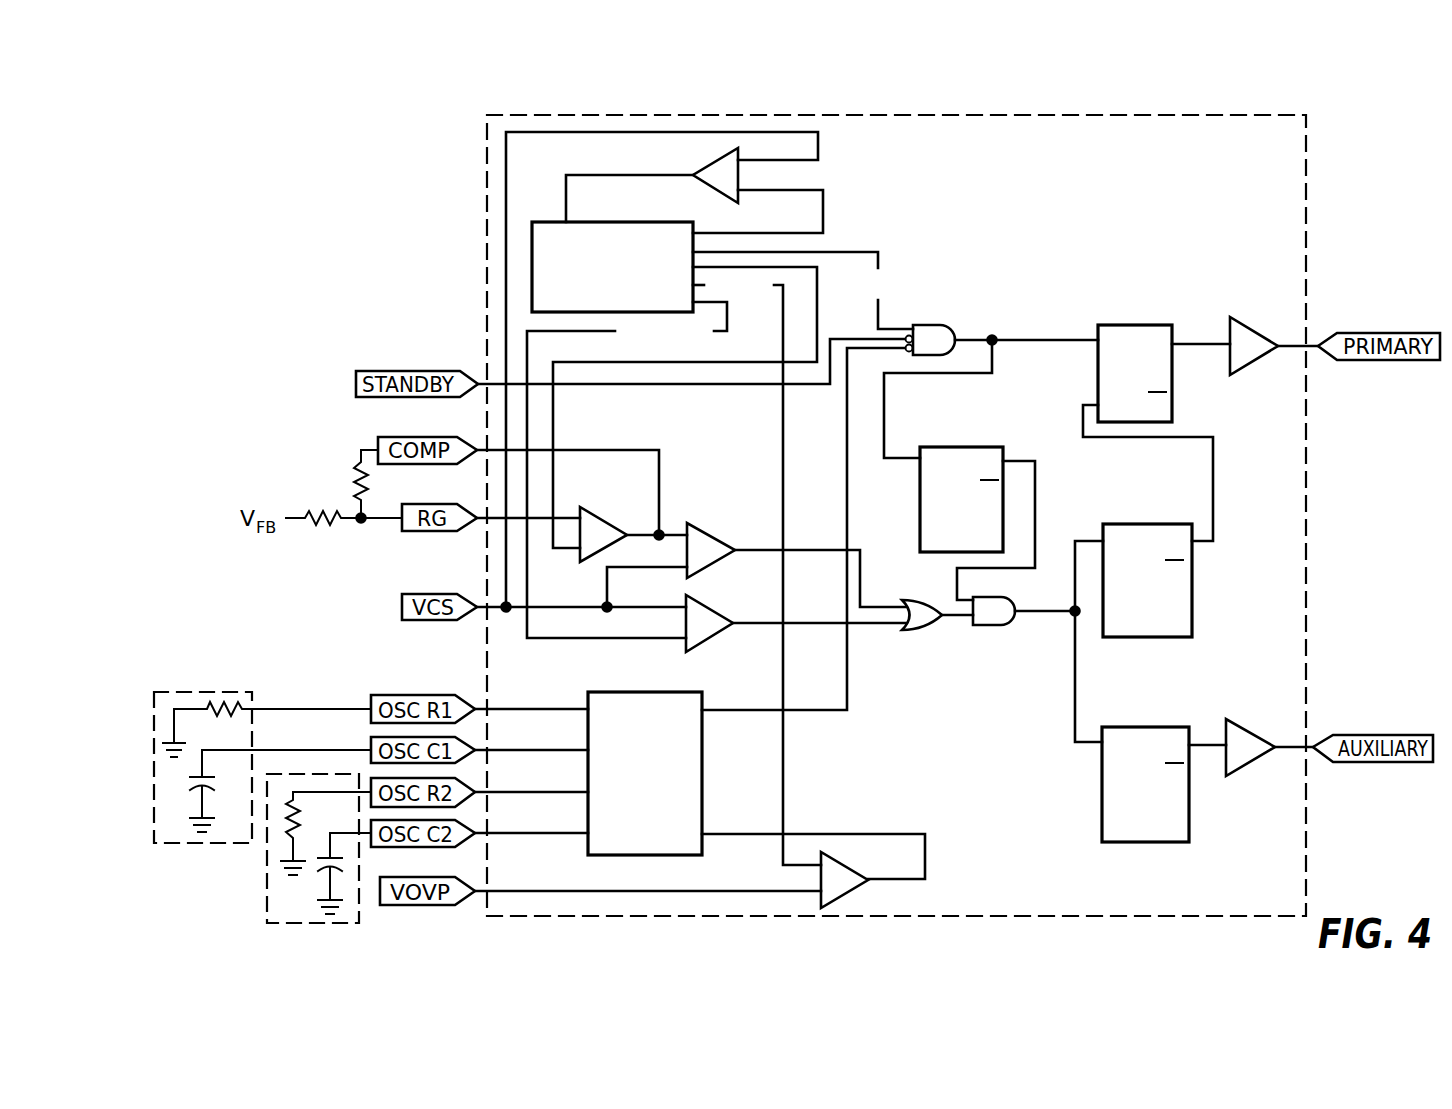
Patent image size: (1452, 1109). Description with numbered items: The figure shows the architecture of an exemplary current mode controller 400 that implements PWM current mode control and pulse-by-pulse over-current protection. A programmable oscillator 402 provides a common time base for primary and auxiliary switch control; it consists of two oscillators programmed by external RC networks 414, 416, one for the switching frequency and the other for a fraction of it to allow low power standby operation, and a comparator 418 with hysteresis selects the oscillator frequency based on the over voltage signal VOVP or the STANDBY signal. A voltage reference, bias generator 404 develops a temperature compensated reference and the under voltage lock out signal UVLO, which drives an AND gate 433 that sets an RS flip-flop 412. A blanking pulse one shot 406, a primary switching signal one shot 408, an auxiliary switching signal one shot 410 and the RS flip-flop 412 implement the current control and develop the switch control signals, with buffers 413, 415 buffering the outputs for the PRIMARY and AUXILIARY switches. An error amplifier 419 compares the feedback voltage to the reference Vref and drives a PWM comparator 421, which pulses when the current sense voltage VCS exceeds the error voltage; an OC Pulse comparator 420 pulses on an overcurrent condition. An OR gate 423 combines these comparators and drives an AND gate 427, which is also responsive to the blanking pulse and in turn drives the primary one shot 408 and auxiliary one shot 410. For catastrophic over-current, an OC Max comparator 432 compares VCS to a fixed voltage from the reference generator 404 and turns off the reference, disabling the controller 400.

The current mode controller 400 is at (1396, 884).
The programmable oscillator 402 is at (702, 773).
The voltage reference, bias generator 404 is at (541, 220).
The blanking pulse one shot 406 is at (920, 502).
The primary switching signal one shot 408 is at (1192, 600).
The auxiliary switching signal one shot 410 is at (1193, 731).
The RS flip-flop 412 is at (1140, 325).
The buffer 413 is at (1262, 330).
The RC network 414 is at (200, 692).
The buffer 415 is at (1250, 757).
The RC network 416 is at (267, 886).
The comparator 418 is at (852, 890).
The error amplifier 419 is at (609, 522).
The OC Pulse comparator 420 is at (700, 640).
The PWM comparator 421 is at (717, 534).
The OR gate 423 is at (923, 630).
The AND gate 427 is at (1000, 625).
The OC Max comparator 432 is at (716, 161).
The AND gate 433 is at (945, 325).